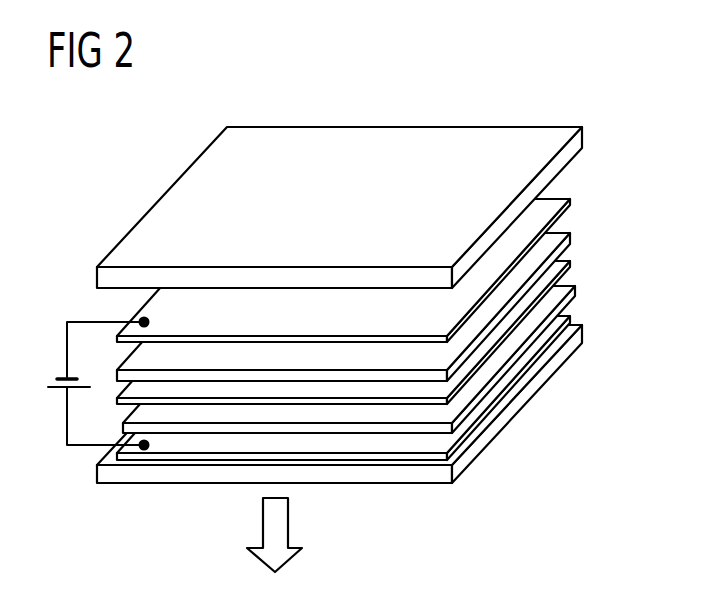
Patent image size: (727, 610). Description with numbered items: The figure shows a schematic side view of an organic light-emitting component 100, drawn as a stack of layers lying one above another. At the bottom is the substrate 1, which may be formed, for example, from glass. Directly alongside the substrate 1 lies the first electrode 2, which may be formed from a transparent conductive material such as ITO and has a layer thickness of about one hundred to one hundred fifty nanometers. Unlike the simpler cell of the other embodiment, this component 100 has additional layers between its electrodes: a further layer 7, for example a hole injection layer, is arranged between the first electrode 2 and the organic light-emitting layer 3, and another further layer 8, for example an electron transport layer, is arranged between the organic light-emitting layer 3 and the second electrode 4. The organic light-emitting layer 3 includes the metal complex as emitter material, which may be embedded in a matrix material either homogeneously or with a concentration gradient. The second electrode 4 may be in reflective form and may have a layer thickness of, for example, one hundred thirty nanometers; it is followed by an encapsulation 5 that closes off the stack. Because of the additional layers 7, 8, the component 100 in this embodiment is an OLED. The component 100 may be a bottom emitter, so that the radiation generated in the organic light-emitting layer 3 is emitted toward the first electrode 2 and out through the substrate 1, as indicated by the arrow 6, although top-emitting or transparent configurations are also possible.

The organic light-emitting component 100 is at (435, 79).
The substrate 1 is at (517, 403).
The first electrode 2 is at (560, 325).
The further layer 7 is at (555, 298).
The organic light-emitting layer 3 is at (550, 275).
The further layer 8 is at (547, 247).
The second electrode 4 is at (547, 207).
The encapsulation 5 is at (553, 136).
The arrow 6 is at (288, 525).